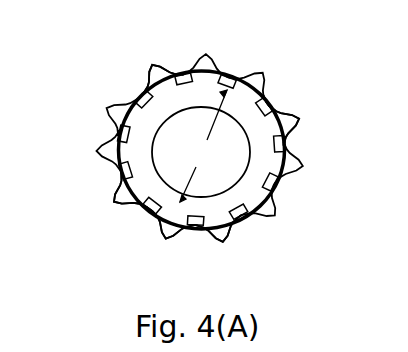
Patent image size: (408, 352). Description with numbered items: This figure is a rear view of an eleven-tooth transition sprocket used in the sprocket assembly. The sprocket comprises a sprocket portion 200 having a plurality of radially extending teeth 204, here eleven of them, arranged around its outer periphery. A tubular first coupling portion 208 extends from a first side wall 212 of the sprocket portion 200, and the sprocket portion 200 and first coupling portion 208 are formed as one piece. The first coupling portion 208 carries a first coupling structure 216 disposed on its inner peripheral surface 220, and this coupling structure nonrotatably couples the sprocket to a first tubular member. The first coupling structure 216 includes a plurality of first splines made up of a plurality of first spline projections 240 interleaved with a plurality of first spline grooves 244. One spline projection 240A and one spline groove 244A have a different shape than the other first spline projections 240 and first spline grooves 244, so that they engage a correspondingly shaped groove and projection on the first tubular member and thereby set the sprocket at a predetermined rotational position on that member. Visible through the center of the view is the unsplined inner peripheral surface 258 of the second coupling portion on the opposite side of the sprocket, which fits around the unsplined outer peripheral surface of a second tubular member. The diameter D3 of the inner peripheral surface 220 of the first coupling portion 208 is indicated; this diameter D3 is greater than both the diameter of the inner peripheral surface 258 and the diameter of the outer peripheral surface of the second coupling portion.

The sprocket portion 200 is at (78, 97).
The teeth 204 is at (158, 66).
The spline projection 240A is at (141, 97).
The spline groove 244A is at (190, 80).
The inner peripheral surface 258 is at (268, 138).
The first coupling structure 216 is at (273, 112).
The first coupling portion 208 is at (118, 175).
The first side wall 212 is at (155, 236).
The inner peripheral surface 220 is at (228, 233).
The first spline grooves 244 is at (206, 212).
The first spline projections 240 is at (273, 215).
The diameter D3 is at (203, 146).